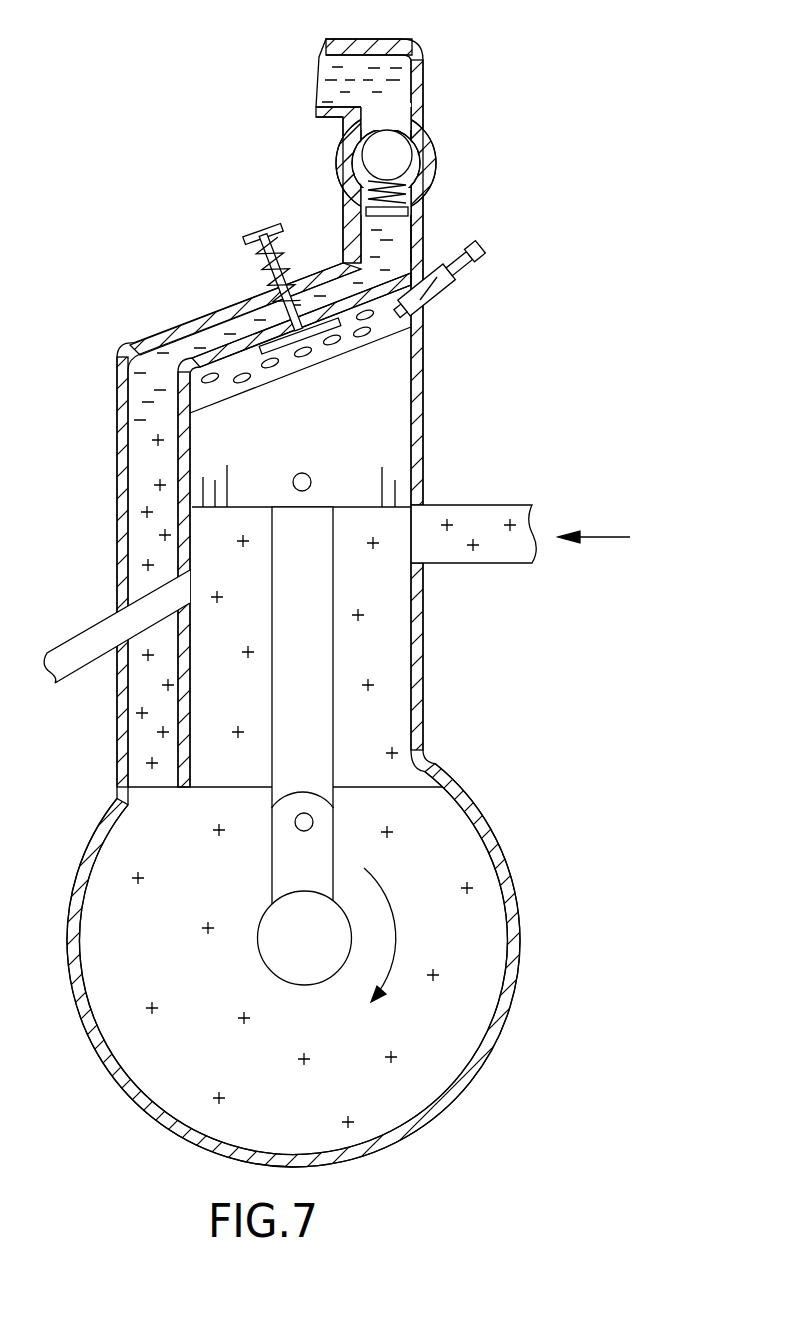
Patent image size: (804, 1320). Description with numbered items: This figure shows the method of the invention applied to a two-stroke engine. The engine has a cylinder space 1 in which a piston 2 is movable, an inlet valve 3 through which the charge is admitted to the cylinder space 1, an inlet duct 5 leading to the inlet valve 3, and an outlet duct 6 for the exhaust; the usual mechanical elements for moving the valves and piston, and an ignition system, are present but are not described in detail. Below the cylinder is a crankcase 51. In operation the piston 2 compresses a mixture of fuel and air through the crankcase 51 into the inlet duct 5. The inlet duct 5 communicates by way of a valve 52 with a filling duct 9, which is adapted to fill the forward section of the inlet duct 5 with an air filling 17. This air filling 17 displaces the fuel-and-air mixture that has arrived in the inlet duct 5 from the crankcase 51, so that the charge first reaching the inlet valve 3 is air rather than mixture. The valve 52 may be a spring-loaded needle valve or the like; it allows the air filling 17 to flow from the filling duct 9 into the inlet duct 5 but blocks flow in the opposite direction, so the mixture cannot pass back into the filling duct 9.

The cylinder space 1 is at (203, 393).
The piston 2 is at (395, 390).
The inlet valve 3 is at (265, 230).
The inlet duct 5 is at (227, 335).
The outlet duct 6 is at (108, 632).
The filling duct 9 is at (393, 67).
The air filling 17 is at (403, 233).
The crankcase 51 is at (455, 832).
The valve 52 is at (400, 160).